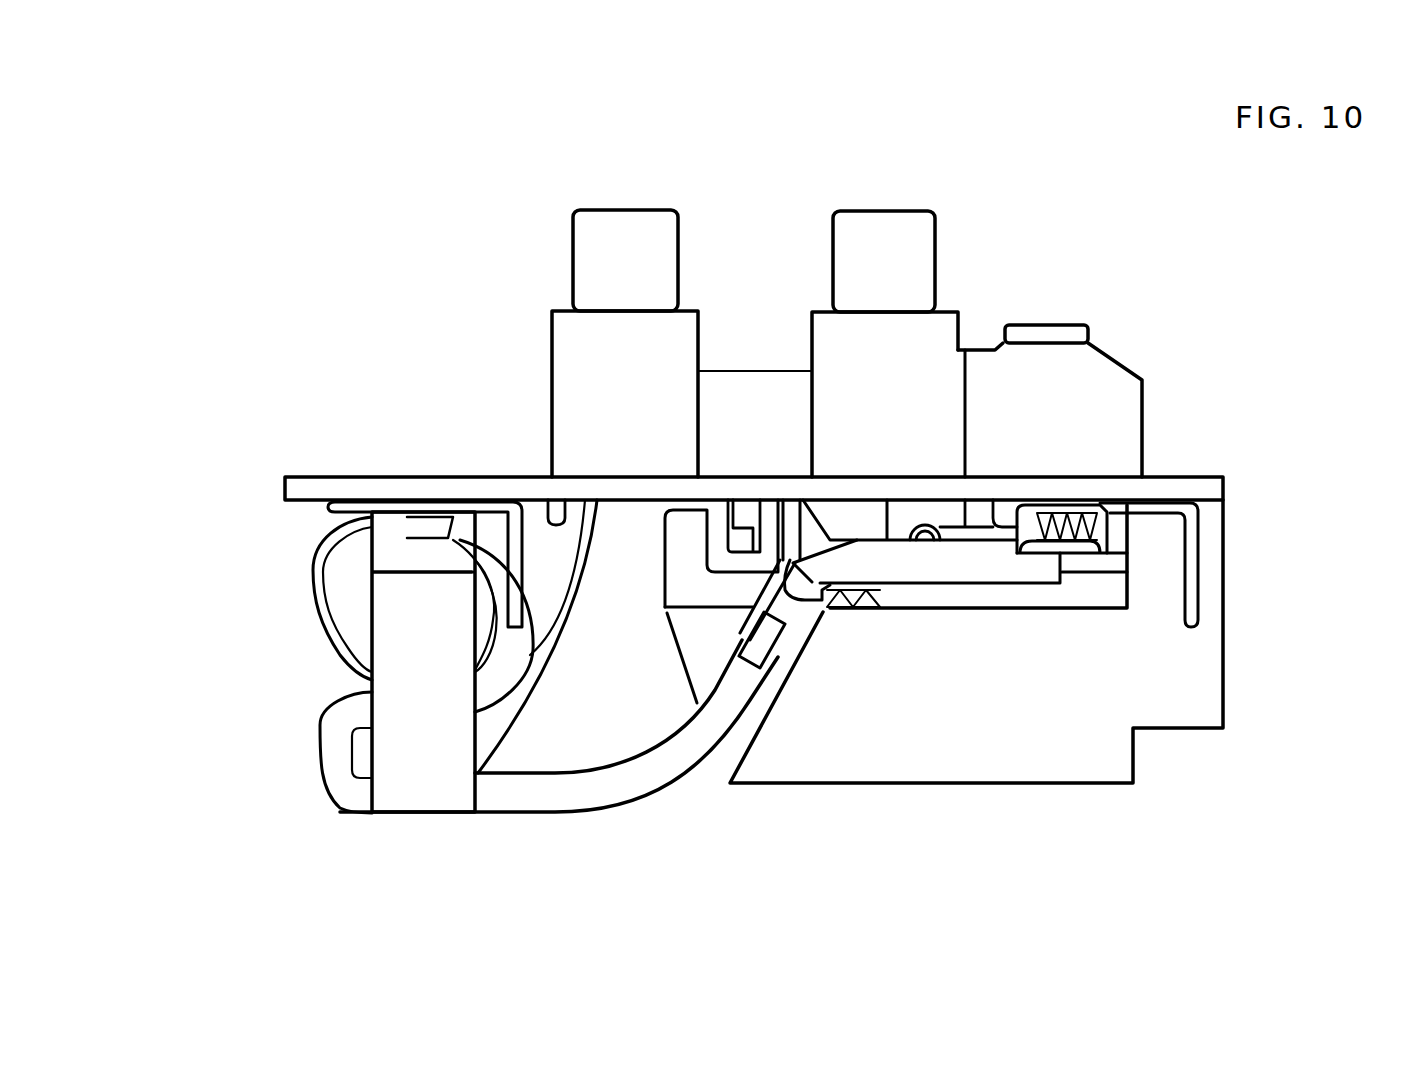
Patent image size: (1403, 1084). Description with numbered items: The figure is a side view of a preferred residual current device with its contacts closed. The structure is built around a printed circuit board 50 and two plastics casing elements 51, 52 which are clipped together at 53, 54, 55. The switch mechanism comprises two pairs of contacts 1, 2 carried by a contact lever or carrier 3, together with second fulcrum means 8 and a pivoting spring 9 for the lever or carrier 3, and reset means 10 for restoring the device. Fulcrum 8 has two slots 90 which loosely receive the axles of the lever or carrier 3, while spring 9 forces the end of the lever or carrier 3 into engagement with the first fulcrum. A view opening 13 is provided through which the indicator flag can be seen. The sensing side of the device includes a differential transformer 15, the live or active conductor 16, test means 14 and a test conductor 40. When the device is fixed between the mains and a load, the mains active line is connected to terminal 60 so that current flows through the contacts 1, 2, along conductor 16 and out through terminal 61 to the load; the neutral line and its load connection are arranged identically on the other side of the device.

The contact 1 is at (1097, 503).
The contact 2 is at (1110, 550).
The contact lever or carrier 3 is at (990, 570).
The second fulcrum means 8 is at (910, 513).
The pivoting spring 9 is at (802, 605).
The reset means 10 is at (897, 245).
The view opening 13 is at (1035, 323).
The test means 14 is at (623, 235).
The differential transformer 15 is at (405, 632).
The live or active conductor 16 is at (546, 792).
The test conductor 40 is at (318, 573).
The printed circuit board 50 is at (345, 485).
The plastics casing element 51 is at (585, 345).
The plastics casing element 52 is at (1175, 688).
The clip 53 is at (556, 510).
The clip 54 is at (747, 540).
The clip 55 is at (1117, 537).
The terminal 60 is at (1192, 563).
The terminal 61 is at (517, 610).
The slot 90 is at (935, 530).